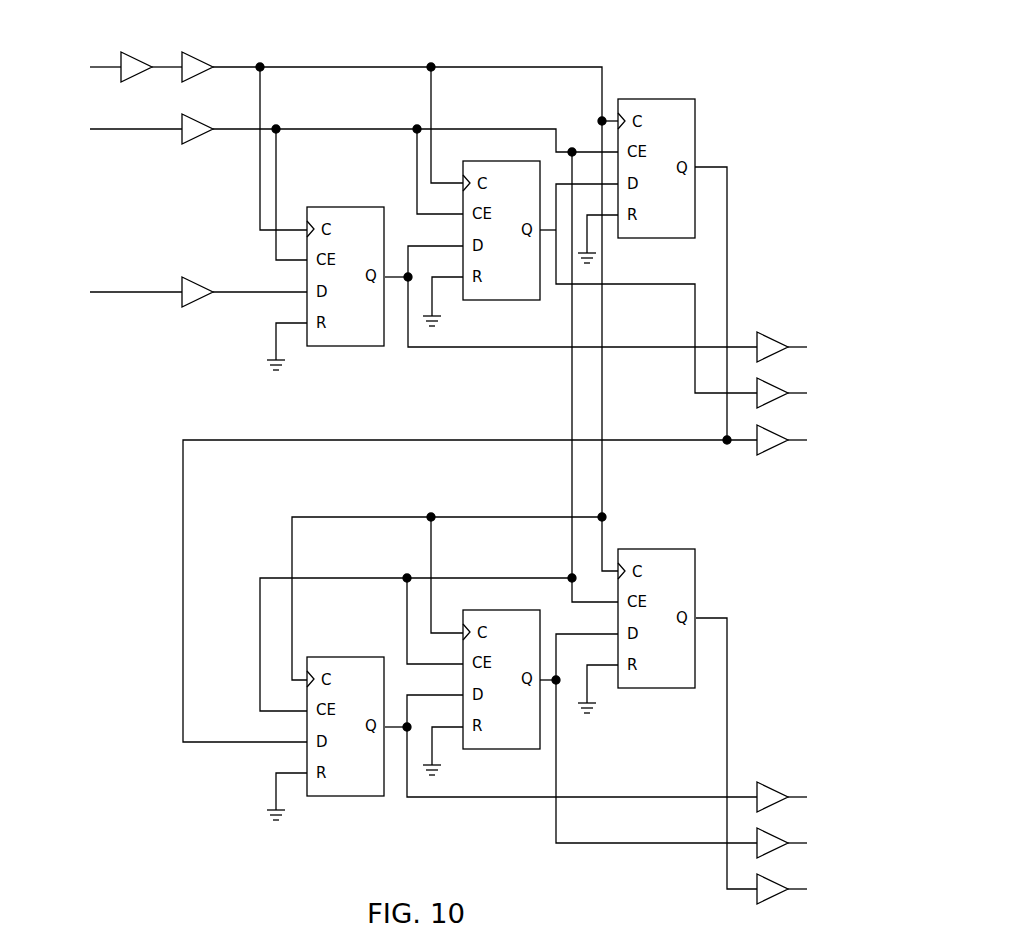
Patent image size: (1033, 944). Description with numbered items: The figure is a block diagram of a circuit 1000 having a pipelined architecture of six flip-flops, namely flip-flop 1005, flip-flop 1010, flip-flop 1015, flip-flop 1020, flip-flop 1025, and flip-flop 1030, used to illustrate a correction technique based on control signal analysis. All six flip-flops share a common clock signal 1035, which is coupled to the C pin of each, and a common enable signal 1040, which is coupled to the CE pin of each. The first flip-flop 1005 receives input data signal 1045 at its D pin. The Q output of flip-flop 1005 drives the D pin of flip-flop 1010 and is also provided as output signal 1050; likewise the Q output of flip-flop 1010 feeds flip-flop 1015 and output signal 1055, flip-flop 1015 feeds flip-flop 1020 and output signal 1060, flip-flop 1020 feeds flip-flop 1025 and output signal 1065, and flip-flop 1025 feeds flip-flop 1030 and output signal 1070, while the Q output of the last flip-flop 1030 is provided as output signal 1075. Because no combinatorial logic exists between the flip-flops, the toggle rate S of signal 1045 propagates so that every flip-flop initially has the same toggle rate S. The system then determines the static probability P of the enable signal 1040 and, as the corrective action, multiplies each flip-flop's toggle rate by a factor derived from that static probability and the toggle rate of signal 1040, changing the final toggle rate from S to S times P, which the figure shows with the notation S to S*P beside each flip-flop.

The circuit 1000 is at (435, 30).
The flip-flop 1005 is at (378, 238).
The flip-flop 1010 is at (534, 192).
The flip-flop 1015 is at (689, 130).
The flip-flop 1020 is at (378, 688).
The flip-flop 1025 is at (534, 641).
The flip-flop 1030 is at (689, 580).
The common clock signal 1035 is at (129, 67).
The common enable signal 1040 is at (129, 129).
The input data signal 1045 is at (129, 292).
The output signal 1050 is at (803, 347).
The output signal 1055 is at (803, 393).
The output signal 1060 is at (803, 440).
The output signal 1065 is at (803, 797).
The output signal 1070 is at (803, 843).
The output signal 1075 is at (803, 889).